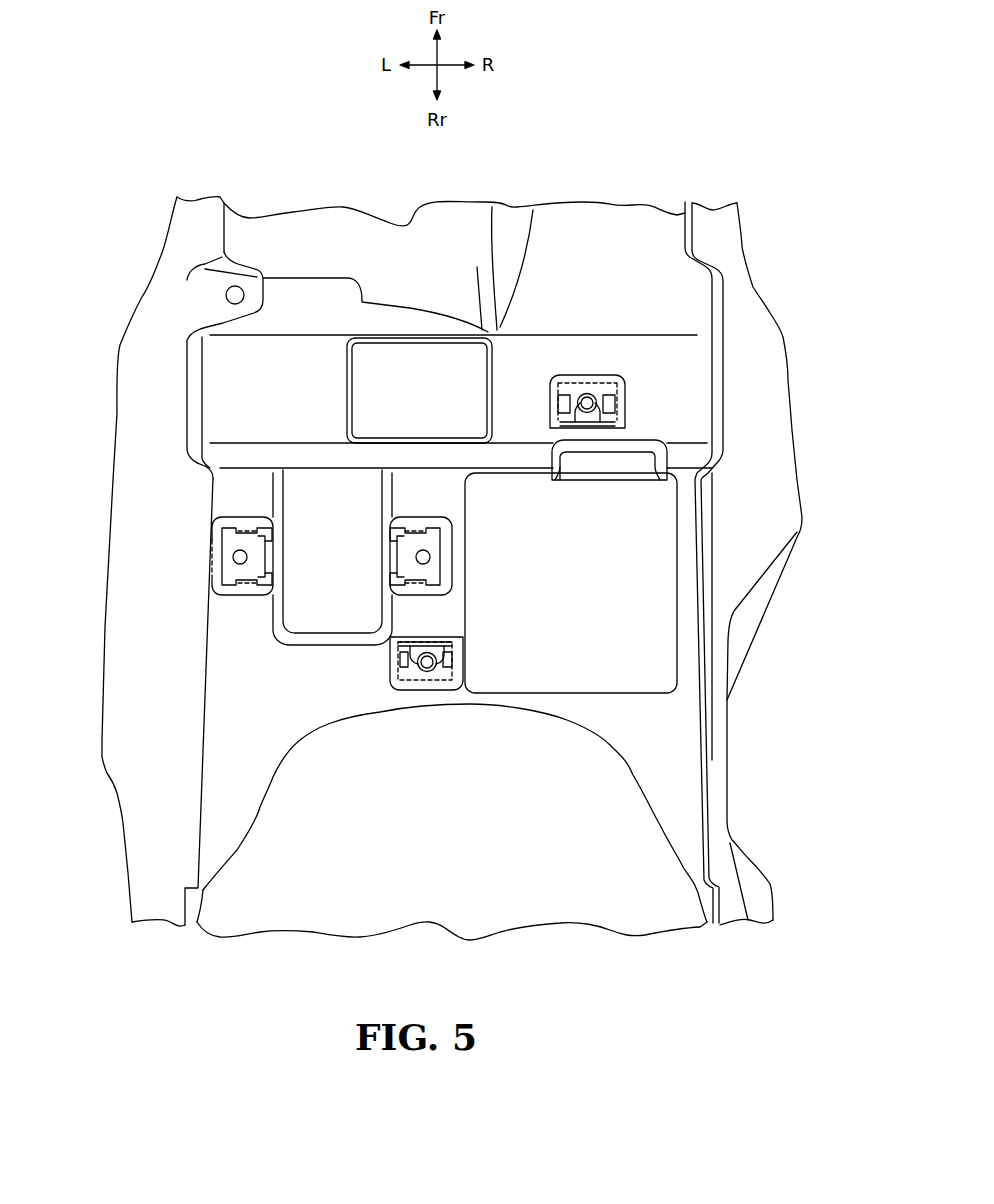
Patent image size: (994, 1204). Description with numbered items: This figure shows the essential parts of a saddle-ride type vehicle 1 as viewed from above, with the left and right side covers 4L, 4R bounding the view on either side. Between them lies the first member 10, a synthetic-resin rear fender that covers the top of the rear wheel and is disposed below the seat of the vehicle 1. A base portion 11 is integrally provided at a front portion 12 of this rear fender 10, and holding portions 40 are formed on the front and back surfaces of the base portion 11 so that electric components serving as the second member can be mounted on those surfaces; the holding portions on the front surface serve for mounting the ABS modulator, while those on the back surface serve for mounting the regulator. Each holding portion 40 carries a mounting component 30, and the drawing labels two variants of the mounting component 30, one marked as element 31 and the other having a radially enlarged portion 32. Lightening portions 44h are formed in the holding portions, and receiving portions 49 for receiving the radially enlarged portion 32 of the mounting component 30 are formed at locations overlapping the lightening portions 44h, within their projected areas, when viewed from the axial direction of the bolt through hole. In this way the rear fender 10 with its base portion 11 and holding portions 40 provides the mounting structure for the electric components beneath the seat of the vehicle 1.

The saddle-ride type vehicle 1 is at (661, 170).
The left side cover 4L is at (107, 552).
The right side cover 4R is at (757, 637).
The first member 10 is at (622, 905).
The base portion 11 is at (662, 378).
The front portion 12 is at (258, 416).
The mounting component 30 is at (400, 530).
The first clip 31 is at (588, 392).
The radially enlarged portion 32 is at (231, 541).
The holding portions 40 is at (444, 537).
The lightening portions 44h is at (563, 400).
The receiving portions 49 is at (243, 528).